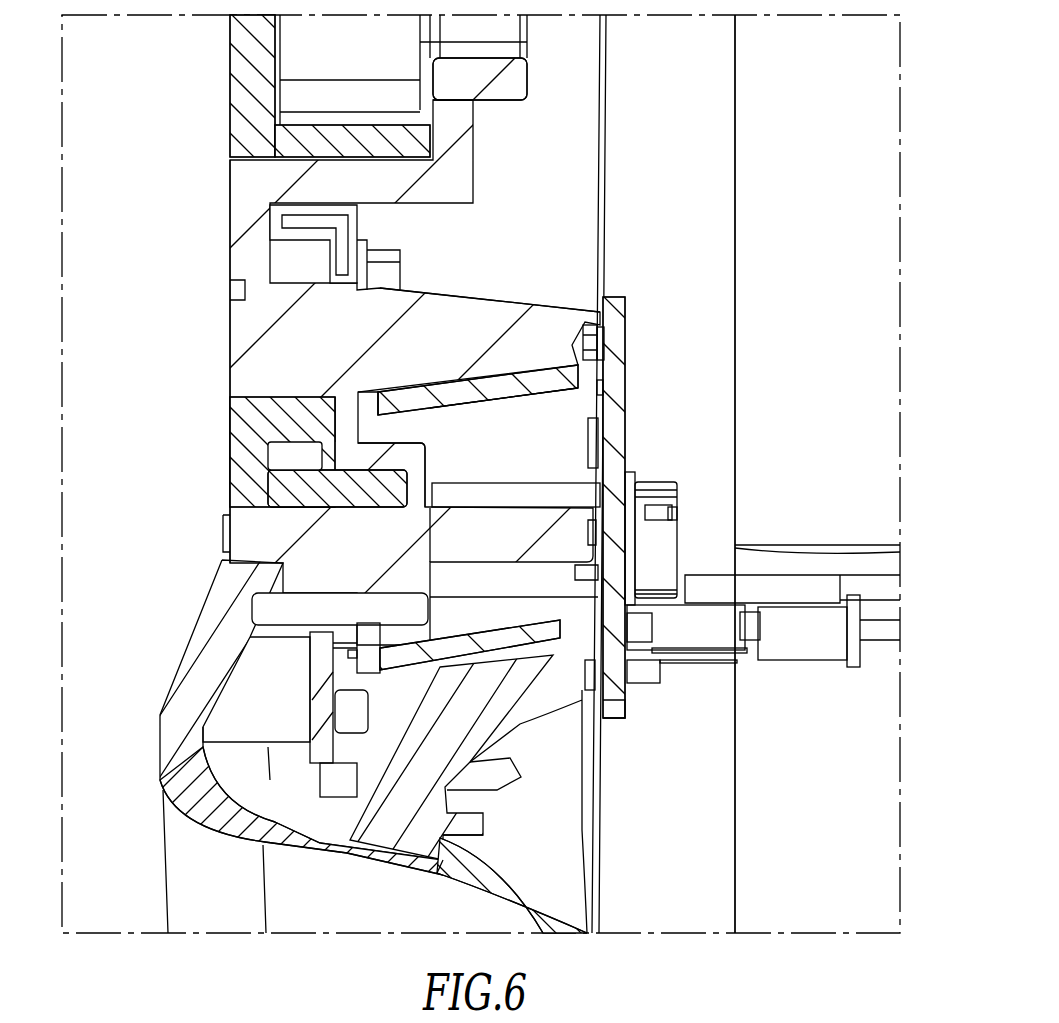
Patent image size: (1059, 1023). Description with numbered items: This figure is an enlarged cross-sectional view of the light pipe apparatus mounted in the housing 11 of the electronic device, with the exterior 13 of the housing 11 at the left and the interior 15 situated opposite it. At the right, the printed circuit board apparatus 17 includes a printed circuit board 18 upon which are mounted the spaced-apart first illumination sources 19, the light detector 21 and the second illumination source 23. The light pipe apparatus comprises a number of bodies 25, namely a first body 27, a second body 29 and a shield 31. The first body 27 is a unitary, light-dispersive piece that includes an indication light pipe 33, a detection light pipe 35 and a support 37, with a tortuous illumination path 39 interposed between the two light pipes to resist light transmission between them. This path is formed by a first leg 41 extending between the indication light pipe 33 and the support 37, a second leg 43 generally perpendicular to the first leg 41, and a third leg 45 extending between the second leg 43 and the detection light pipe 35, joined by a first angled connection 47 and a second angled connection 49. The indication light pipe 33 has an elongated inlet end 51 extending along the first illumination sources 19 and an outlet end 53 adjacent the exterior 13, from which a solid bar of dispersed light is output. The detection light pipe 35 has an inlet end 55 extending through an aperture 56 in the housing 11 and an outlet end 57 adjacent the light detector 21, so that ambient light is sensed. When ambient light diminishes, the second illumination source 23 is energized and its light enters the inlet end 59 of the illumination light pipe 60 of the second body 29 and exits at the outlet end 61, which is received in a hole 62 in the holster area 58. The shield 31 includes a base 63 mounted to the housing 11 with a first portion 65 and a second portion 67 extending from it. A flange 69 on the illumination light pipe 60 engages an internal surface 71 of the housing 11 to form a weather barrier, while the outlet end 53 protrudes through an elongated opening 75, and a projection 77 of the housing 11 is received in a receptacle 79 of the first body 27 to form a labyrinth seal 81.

The housing 11 is at (230, 185).
The exterior 13 is at (47, 128).
The interior 15 is at (573, 88).
The printed circuit board apparatus 17 is at (641, 295).
The printed circuit board 18 is at (628, 707).
The first illumination sources 19 is at (590, 325).
The light detector 21 is at (588, 532).
The second illumination source 23 is at (585, 673).
The bodies 25 is at (541, 192).
The first body 27 is at (455, 278).
The second body 29 is at (538, 734).
The shield 31 is at (482, 419).
The indication light pipe 33 is at (498, 293).
The detection light pipe 35 is at (508, 488).
The support 37 is at (446, 588).
The tortuous illumination path 39 is at (415, 428).
The first leg 41 is at (310, 395).
The second leg 43 is at (380, 498).
The third leg 45 is at (430, 495).
The first angled connection 47 is at (352, 498).
The second angled connection 49 is at (422, 460).
The inlet end 51 is at (610, 365).
The outlet end 53 is at (232, 335).
The inlet end 55 is at (225, 525).
The aperture 56 is at (262, 505).
The outlet end 57 is at (605, 565).
The holster area 58 is at (455, 885).
The inlet end 59 is at (605, 645).
The illumination light pipe 60 is at (511, 756).
The outlet end 61 is at (385, 856).
The hole 62 is at (350, 858).
The base 63 is at (378, 400).
The first portion 65 is at (610, 396).
The second portion 67 is at (455, 660).
The flange 69 is at (470, 813).
The internal surface 71 is at (490, 835).
The opening 75 is at (240, 296).
The projection 77 is at (368, 258).
The receptacle 79 is at (335, 253).
The labyrinth seal 81 is at (300, 222).